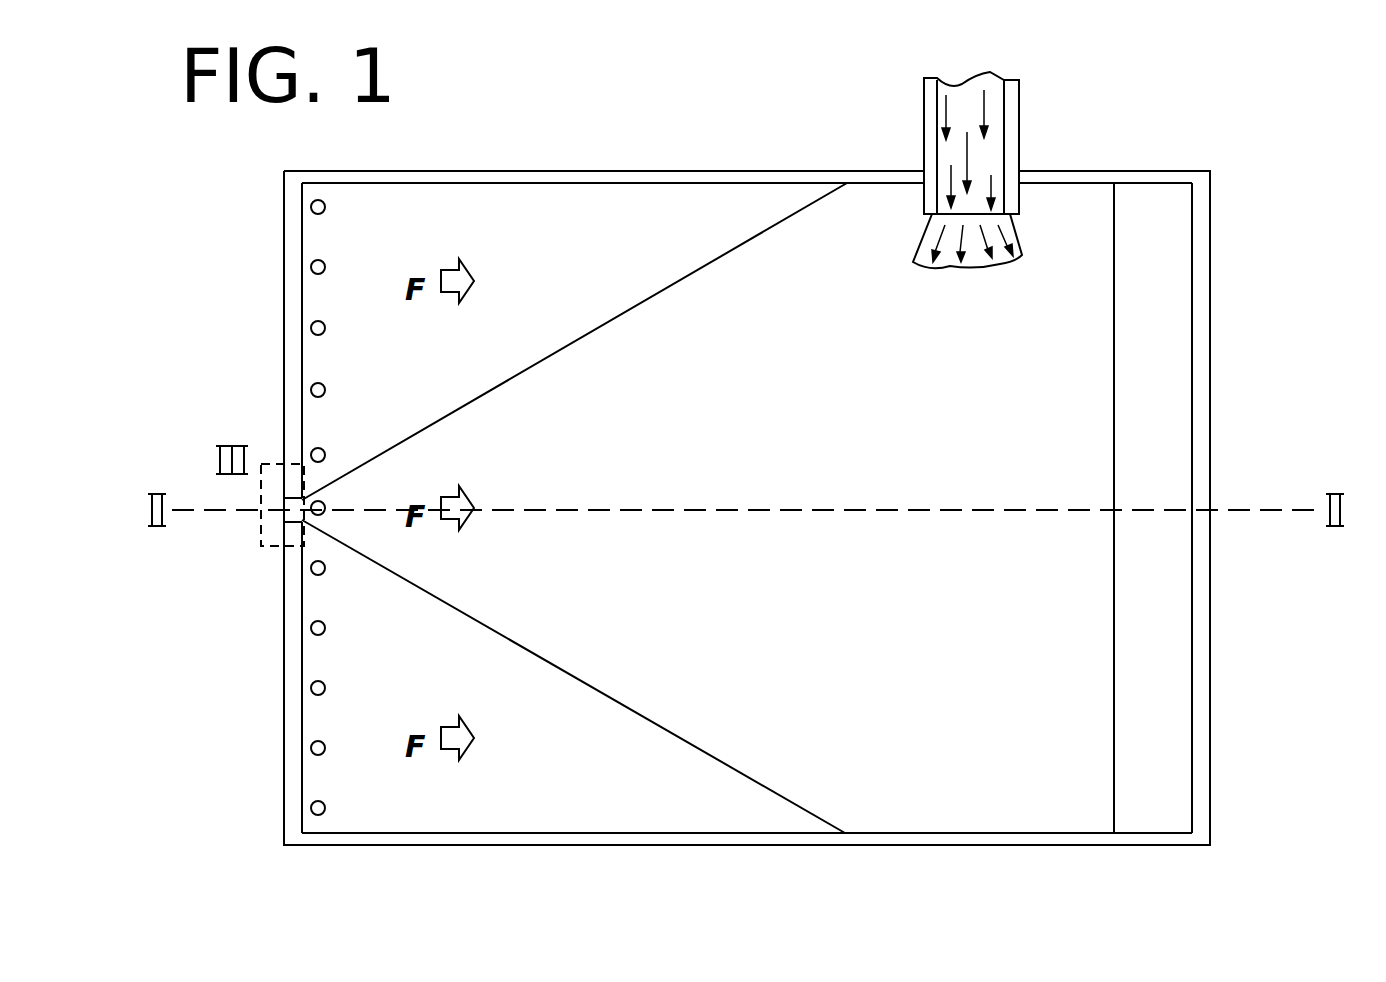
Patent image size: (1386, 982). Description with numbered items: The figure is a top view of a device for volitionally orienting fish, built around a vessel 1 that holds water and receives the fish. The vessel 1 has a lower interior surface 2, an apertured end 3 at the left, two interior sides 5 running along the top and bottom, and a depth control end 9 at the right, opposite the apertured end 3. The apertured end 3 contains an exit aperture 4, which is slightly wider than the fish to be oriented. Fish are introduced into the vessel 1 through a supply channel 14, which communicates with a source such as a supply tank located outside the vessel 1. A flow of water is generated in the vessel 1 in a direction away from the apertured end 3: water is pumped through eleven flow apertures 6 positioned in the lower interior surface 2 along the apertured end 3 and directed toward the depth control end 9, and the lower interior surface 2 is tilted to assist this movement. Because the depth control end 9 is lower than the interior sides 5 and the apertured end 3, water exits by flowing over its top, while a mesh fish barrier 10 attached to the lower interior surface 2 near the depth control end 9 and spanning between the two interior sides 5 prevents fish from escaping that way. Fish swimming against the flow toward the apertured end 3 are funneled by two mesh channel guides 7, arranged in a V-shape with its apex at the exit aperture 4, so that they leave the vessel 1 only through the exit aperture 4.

The vessel 1 is at (697, 152).
The lower interior surface 2 is at (804, 353).
The apertured end 3 is at (284, 213).
The exit aperture 4 is at (290, 515).
The side interior surface 5 is at (568, 170).
The flow apertures 6 is at (333, 805).
The channel guide 7 is at (585, 310).
The depth control end 9 is at (1204, 326).
The fish barrier 10 is at (1125, 468).
The supply channel 14 is at (927, 112).